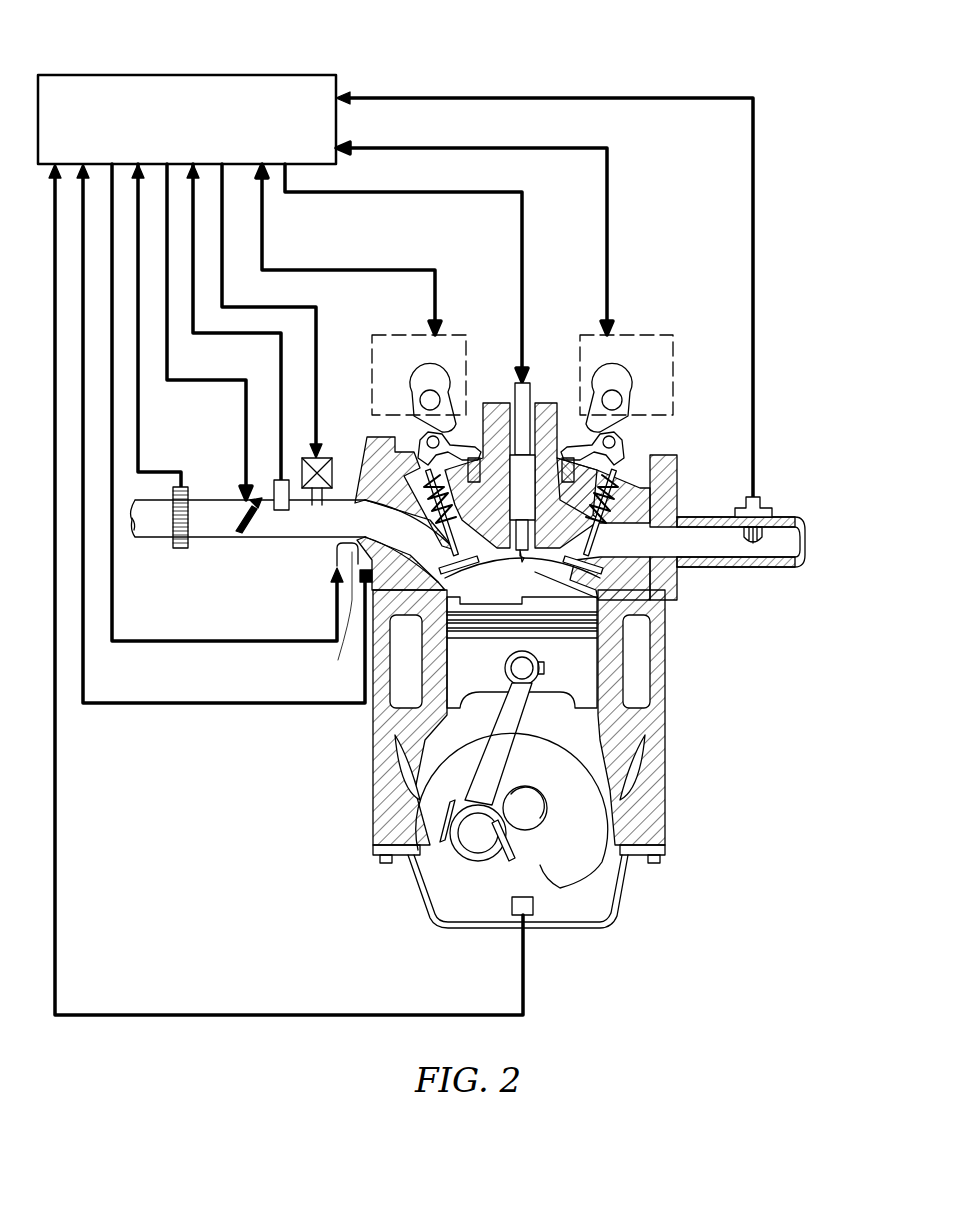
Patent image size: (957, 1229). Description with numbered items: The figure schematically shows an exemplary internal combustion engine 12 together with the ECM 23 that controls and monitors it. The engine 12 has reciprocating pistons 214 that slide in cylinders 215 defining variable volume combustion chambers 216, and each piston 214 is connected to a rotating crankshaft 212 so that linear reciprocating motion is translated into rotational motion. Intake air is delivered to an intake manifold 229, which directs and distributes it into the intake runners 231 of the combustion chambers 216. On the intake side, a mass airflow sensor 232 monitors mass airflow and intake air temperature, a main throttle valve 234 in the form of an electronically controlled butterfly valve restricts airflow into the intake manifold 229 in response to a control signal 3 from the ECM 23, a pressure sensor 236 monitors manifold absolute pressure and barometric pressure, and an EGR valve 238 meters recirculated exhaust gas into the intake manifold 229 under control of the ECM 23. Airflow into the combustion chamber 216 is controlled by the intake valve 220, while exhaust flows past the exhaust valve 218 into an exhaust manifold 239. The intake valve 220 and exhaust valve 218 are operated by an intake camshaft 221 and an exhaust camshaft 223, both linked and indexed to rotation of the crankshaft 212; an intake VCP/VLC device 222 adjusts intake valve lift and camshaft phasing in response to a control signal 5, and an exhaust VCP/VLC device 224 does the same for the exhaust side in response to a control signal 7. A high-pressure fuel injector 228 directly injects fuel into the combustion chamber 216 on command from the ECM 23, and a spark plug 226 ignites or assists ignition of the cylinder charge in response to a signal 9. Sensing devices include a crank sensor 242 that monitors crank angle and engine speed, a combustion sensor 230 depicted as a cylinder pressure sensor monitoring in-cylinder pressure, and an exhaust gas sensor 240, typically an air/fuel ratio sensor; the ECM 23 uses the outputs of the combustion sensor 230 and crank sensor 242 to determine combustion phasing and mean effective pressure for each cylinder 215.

The ECM 23 is at (303, 68).
The control signal 3 is at (209, 332).
The control signal 5 is at (348, 249).
The control signal 7 is at (474, 228).
The signal 9 is at (406, 273).
The internal combustion engine 12 is at (672, 720).
The crankshaft 212 is at (560, 850).
The piston 214 is at (518, 716).
The cylinder 215 is at (610, 607).
The combustion chamber 216 is at (488, 583).
The exhaust valve 218 is at (595, 558).
The intake valve 220 is at (440, 540).
The intake camshaft 221 is at (432, 399).
The intake VCP/VLC device 222 is at (452, 350).
The exhaust camshaft 223 is at (620, 394).
The exhaust VCP/VLC device 224 is at (662, 392).
The spark plug 226 is at (531, 383).
The fuel injector 228 is at (337, 616).
The intake manifold 229 is at (349, 506).
The combustion sensor 230 is at (355, 600).
The intake runner 231 is at (367, 505).
The mass airflow sensor 232 is at (180, 549).
The main throttle valve 234 is at (240, 533).
The pressure sensor 236 is at (280, 512).
The EGR valve 238 is at (316, 506).
The exhaust manifold 239 is at (690, 517).
The exhaust gas sensor 240 is at (760, 505).
The crank sensor 242 is at (515, 905).